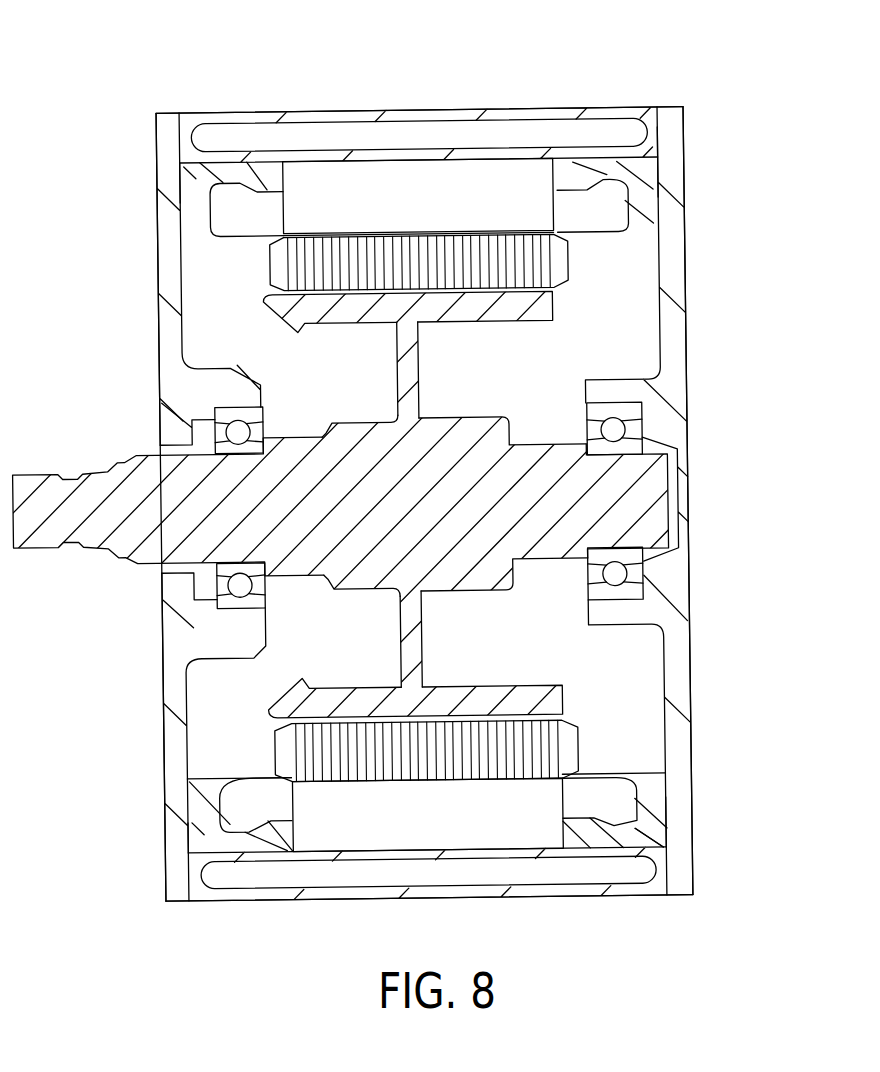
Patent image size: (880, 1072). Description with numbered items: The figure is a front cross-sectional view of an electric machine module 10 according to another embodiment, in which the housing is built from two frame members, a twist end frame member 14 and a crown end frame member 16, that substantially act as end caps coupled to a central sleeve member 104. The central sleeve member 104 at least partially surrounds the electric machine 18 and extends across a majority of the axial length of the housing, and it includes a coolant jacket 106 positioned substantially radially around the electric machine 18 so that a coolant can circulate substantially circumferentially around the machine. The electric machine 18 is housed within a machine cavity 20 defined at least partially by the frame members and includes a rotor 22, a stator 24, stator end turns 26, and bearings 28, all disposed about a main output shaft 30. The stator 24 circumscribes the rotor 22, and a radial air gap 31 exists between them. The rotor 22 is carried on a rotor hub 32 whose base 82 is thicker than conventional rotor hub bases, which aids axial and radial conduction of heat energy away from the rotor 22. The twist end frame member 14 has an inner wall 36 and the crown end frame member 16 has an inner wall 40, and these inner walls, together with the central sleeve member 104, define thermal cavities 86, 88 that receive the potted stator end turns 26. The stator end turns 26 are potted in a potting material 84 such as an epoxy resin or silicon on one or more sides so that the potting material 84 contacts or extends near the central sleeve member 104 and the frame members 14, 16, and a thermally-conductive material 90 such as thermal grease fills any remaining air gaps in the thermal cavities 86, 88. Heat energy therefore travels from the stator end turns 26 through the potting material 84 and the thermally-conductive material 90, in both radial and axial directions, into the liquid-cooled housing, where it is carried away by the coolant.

The electric machine module 10 is at (96, 78).
The twist end frame member 14 is at (166, 258).
The crown end frame member 16 is at (674, 270).
The electric machine 18 is at (569, 295).
The machine cavity 20 is at (545, 388).
The rotor 22 is at (399, 262).
The stator 24 is at (312, 177).
The stator end turns 26 is at (237, 218).
The bearings 28 is at (238, 432).
The main output shaft 30 is at (648, 490).
The radial air gap 31 is at (312, 228).
The rotor hub 32 is at (403, 375).
The inner wall of twist end frame member 36 is at (190, 318).
The inner wall of crown end frame member 40 is at (652, 315).
The rotor hub base 82 is at (532, 690).
The potting material 84 is at (262, 163).
The thermal cavity 86 is at (190, 176).
The thermal cavity 88 is at (645, 214).
The thermally-conductive material 90 is at (188, 168).
The central sleeve member 104 is at (640, 108).
The coolant jacket 106 is at (540, 135).